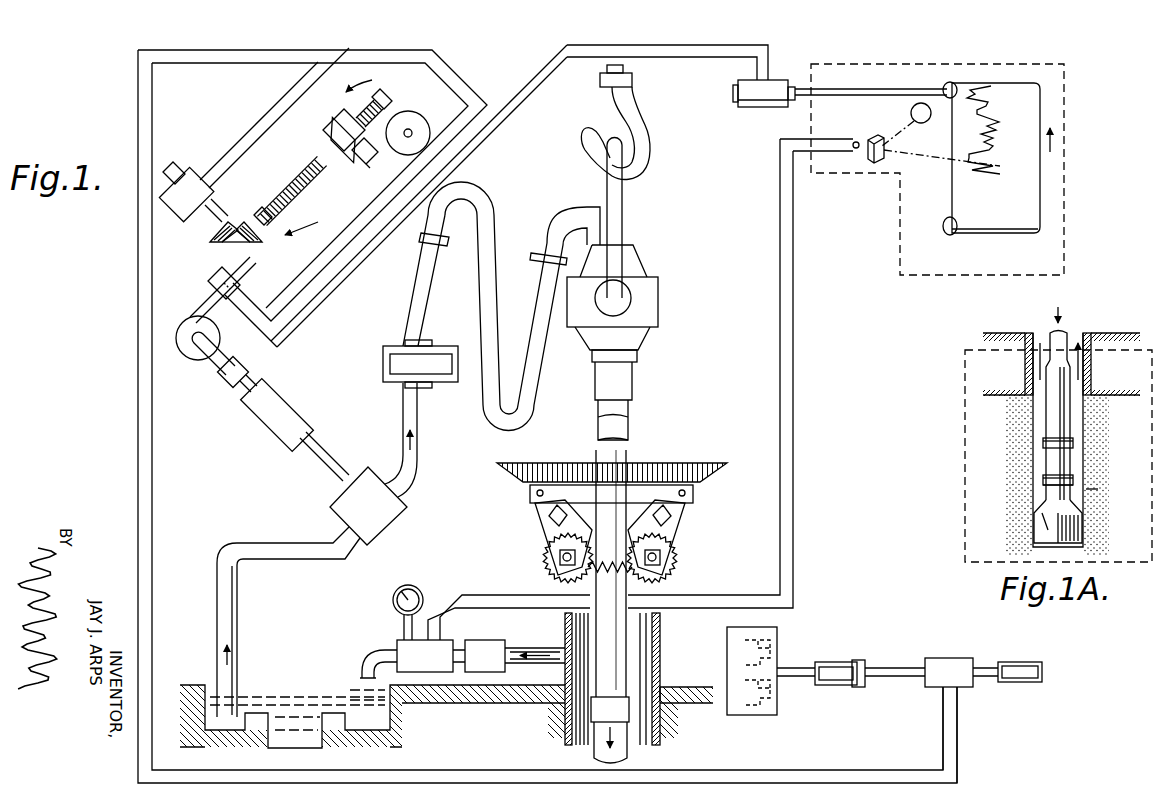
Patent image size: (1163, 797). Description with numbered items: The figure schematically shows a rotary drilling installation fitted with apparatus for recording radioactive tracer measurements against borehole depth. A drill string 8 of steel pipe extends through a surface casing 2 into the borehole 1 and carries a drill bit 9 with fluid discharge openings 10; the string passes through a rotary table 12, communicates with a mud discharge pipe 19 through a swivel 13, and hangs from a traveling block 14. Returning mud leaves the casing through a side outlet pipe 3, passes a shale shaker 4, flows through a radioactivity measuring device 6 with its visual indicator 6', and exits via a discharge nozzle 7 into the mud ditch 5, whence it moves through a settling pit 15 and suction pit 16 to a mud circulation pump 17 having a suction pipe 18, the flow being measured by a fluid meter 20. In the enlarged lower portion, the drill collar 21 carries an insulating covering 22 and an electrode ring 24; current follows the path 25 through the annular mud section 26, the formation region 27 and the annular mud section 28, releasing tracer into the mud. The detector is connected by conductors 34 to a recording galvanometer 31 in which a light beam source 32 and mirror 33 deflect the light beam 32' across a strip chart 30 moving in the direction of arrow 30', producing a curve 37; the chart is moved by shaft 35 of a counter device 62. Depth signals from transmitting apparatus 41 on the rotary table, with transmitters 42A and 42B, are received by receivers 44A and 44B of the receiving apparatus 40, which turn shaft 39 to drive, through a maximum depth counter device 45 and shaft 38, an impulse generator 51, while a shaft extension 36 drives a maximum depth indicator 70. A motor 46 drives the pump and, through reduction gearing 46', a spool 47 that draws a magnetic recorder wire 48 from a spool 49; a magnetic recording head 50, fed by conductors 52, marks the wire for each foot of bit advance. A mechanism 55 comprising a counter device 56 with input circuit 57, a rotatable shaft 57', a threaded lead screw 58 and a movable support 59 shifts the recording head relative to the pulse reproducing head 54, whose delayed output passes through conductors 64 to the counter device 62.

In FIG. 1, the borehole 1 is at (652, 695).
In FIG. 1A, the borehole 1 is at (1085, 415).
In FIG. 1, the surface casing 2 is at (660, 660).
In FIG. 1, the side outlet pipe 3 is at (536, 663).
In FIG. 1, the shale shaker 4 is at (479, 656).
In FIG. 1, the mud ditch 5 is at (357, 717).
In FIG. 1, the radioactivity measuring device 6 is at (425, 656).
In FIG. 1, the visual radioactivity indicator 6' is at (408, 600).
In FIG. 1, the discharge nozzle 7 is at (362, 660).
In FIG. 1, the drill string 8 is at (630, 754).
In FIG. 1A, the drill string 8 is at (1066, 336).
In FIG. 1A, the drill bit 9 is at (1040, 530).
In FIG. 1A, the fluid discharge openings 10 is at (1066, 530).
In FIG. 1, the rotary table 12 is at (702, 468).
In FIG. 1, the swivel 13 is at (645, 312).
In FIG. 1, the traveling block 14 is at (600, 80).
In FIG. 1, the settling pit 15 is at (288, 725).
In FIG. 1, the suction pit 16 is at (240, 712).
In FIG. 1, the mud circulation pump 17 is at (397, 505).
In FIG. 1, the suction pipe 18 is at (250, 542).
In FIG. 1, the mud discharge pipe 19 is at (483, 196).
In FIG. 1, the fluid meter 20 is at (385, 346).
In FIG. 1A, the drill collar 21 is at (1078, 431).
In FIG. 1A, the insulating covering 22 is at (1050, 411).
In FIG. 1A, the electrode ring 24 is at (1046, 488).
In FIG. 1A, the current flow path 25 is at (1046, 453).
In FIG. 1A, the annular mud section 26 is at (1041, 440).
In FIG. 1A, the formation region 27 is at (1108, 490).
In FIG. 1A, the annular mud section 28 is at (1041, 480).
In FIG. 1, the strip chart 30 is at (1023, 158).
In FIG. 1, the chart movement arrow 30' is at (1077, 147).
In FIG. 1, the recording galvanometer 31 is at (925, 281).
In FIG. 1, the light beam source 32 is at (897, 111).
In FIG. 1, the light beam 32' is at (941, 154).
In FIG. 1, the mirror 33 is at (874, 163).
In FIG. 1, the conductors 34 is at (780, 242).
In FIG. 1, the shaft 35 is at (893, 89).
In FIG. 1, the shaft extension 36 is at (986, 668).
In FIG. 1, the curve 37 is at (1003, 118).
In FIG. 1, the shaft 38 is at (890, 668).
In FIG. 1, the shaft 39 is at (797, 668).
In FIG. 1, the receiving apparatus 40 is at (778, 720).
In FIG. 1, the transmitting apparatus 41 is at (690, 558).
In FIG. 1, the transmitter 42A is at (670, 520).
In FIG. 1, the transmitter 42B is at (538, 520).
In FIG. 1, the receiver 44A is at (775, 640).
In FIG. 1, the receiver 44B is at (777, 710).
In FIG. 1, the maximum depth counter device 45 is at (845, 687).
In FIG. 1, the motor 46 is at (295, 430).
In FIG. 1, the reduction gearing 46' is at (238, 362).
In FIG. 1, the spool 47 is at (195, 353).
In FIG. 1, the magnetic recorder wire 48 is at (262, 242).
In FIG. 1, the spool 49 is at (408, 111).
In FIG. 1, the magnetic recording head 50 is at (353, 168).
In FIG. 1, the impulse generator 51 is at (949, 720).
In FIG. 1, the conductors 52 is at (207, 58).
In FIG. 1, the pulse reproducing head 54 is at (240, 285).
In FIG. 1, the head adjusting mechanism 55 is at (338, 149).
In FIG. 1, the counter device 56 is at (202, 218).
In FIG. 1, the input circuit 57 is at (274, 118).
In FIG. 1, the rotatable shaft 57' is at (236, 208).
In FIG. 1, the threaded lead screw 58 is at (305, 170).
In FIG. 1, the movable support 59 is at (330, 128).
In FIG. 1, the counter device 62 is at (770, 80).
In FIG. 1, the conductors 64 is at (530, 95).
In FIG. 1, the maximum depth indicator 70 is at (1038, 682).